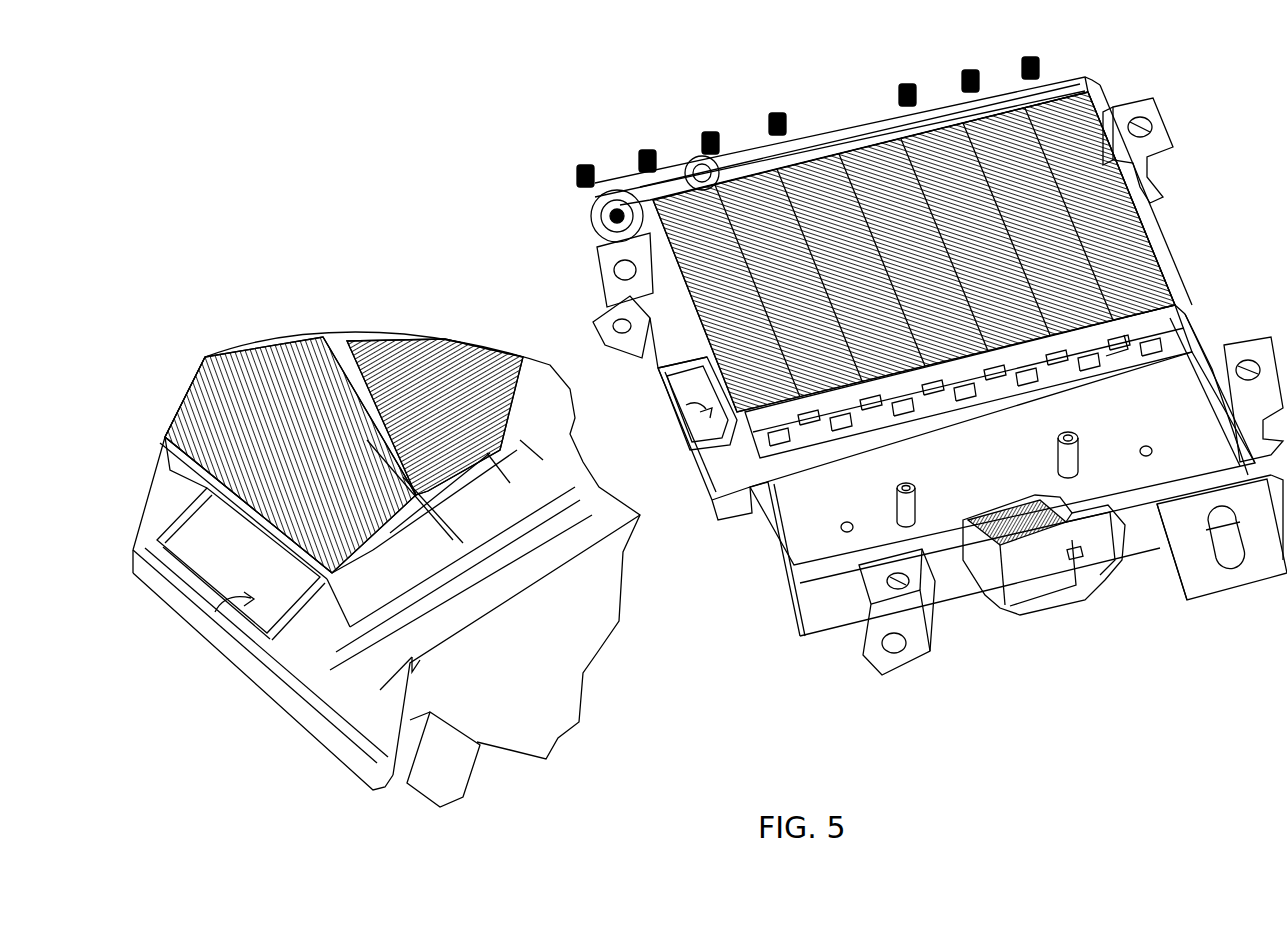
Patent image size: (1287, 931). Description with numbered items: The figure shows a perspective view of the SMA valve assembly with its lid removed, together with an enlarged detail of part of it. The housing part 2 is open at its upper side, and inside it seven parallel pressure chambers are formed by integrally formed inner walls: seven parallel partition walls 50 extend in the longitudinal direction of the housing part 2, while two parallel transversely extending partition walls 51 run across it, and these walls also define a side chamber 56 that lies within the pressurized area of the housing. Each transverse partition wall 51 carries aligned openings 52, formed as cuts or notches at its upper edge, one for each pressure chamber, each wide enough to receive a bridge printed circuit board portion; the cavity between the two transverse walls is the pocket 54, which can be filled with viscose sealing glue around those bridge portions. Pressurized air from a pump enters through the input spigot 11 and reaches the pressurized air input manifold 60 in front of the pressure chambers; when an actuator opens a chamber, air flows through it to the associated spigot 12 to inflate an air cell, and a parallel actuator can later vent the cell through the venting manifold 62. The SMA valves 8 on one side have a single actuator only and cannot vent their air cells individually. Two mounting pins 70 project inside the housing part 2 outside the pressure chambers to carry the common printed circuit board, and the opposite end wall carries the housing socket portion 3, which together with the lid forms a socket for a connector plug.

The housing part 2 is at (1206, 347).
The housing socket portion 3 is at (1004, 600).
The SMA valve 8 is at (1100, 108).
The input spigot 11 is at (586, 176).
The spigot 12 is at (649, 152).
The partition wall 50 is at (1010, 124).
The transversely extending partition wall 51 is at (966, 402).
The opening 52 is at (1104, 359).
The pocket 54 is at (300, 681).
The side chamber 56 is at (676, 423).
The pressurized air input manifold 60 is at (890, 128).
The venting manifold 62 is at (838, 130).
The mounting pin 70 is at (898, 502).